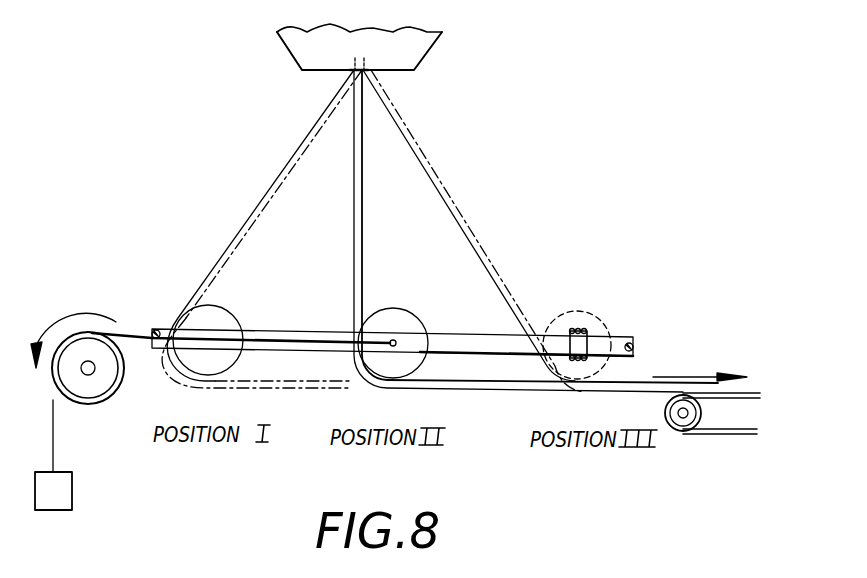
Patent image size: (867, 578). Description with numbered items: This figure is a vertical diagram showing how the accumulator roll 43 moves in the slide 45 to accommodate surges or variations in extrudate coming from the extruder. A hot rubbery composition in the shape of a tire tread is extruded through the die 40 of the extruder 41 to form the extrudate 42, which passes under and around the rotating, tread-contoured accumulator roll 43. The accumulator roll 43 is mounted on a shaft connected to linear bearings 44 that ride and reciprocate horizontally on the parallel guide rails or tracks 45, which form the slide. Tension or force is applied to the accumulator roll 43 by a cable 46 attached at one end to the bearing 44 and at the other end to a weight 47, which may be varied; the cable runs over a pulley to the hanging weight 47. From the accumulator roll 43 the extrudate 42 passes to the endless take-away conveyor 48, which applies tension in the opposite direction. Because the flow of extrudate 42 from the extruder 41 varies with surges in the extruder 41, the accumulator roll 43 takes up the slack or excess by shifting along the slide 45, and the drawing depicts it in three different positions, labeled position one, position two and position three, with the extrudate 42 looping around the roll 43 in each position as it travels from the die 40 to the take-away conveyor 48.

The die 40 is at (364, 72).
The extruder 41 is at (428, 50).
The extrudate 42 is at (265, 193).
The accumulator roll 43 is at (222, 310).
The linear bearing 44 is at (592, 333).
The guide rails or tracks (slide) 45 is at (461, 345).
The cable 46 is at (123, 333).
The weight 47 is at (73, 487).
The endless take-away conveyor 48 is at (672, 425).